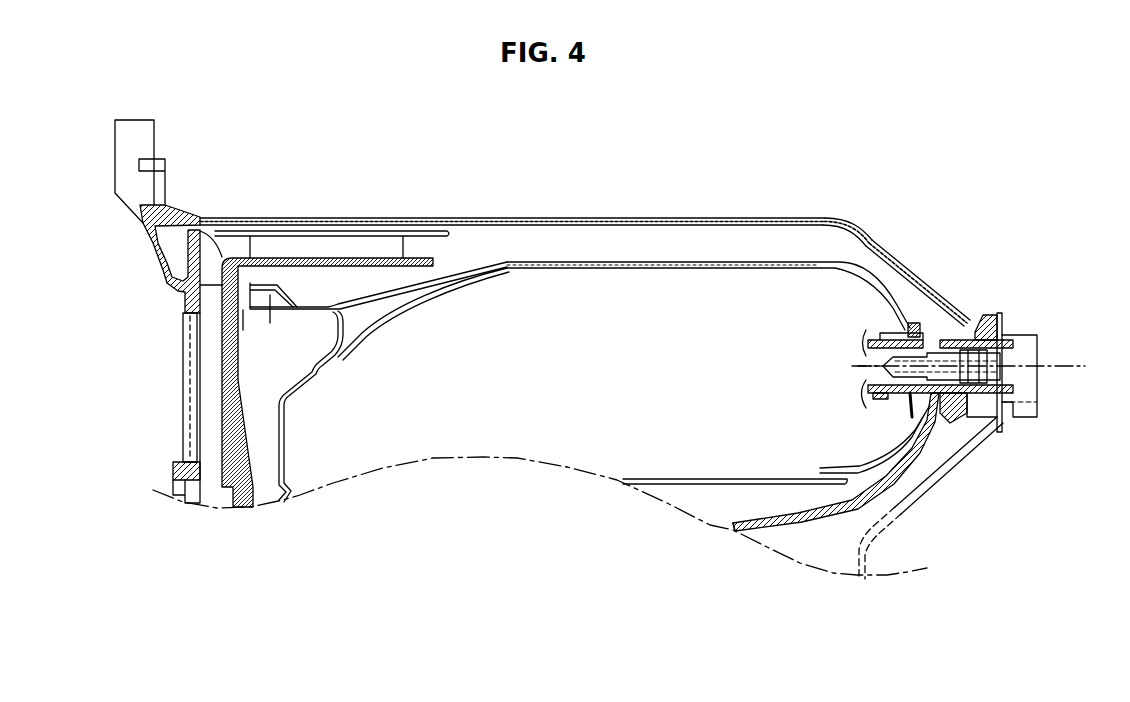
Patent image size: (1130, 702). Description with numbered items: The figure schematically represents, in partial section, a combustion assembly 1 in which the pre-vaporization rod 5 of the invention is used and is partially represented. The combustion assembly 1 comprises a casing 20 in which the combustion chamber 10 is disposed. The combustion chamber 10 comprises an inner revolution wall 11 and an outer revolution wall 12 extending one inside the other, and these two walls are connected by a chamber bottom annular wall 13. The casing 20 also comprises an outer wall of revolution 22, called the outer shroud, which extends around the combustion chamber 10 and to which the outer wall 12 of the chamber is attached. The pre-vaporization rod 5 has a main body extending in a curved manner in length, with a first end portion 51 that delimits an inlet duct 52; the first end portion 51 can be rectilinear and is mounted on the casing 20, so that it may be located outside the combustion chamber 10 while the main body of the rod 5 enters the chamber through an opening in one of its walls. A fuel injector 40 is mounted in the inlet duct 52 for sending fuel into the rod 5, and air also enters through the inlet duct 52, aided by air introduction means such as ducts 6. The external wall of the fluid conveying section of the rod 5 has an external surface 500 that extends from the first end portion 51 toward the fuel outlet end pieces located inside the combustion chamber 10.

The combustion assembly 1 is at (897, 153).
The pre-vaporization rod 5 is at (892, 394).
The duct 6 is at (690, 240).
The combustion chamber 10 is at (635, 380).
The inner revolution wall 11 is at (848, 481).
The outer revolution wall 12 is at (607, 262).
The chamber bottom annular wall 13 is at (903, 420).
The casing 20 is at (838, 217).
The outer wall of revolution 22 is at (900, 250).
The fuel injector 40 is at (940, 347).
The first end portion 51 is at (925, 334).
The inlet duct 52 is at (875, 355).
The external surface 500 is at (873, 399).